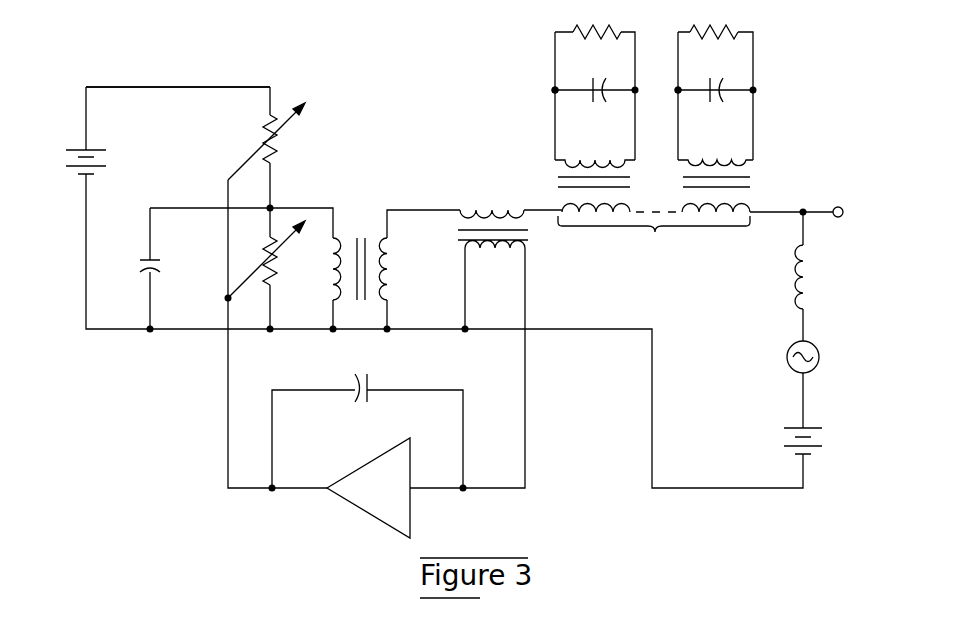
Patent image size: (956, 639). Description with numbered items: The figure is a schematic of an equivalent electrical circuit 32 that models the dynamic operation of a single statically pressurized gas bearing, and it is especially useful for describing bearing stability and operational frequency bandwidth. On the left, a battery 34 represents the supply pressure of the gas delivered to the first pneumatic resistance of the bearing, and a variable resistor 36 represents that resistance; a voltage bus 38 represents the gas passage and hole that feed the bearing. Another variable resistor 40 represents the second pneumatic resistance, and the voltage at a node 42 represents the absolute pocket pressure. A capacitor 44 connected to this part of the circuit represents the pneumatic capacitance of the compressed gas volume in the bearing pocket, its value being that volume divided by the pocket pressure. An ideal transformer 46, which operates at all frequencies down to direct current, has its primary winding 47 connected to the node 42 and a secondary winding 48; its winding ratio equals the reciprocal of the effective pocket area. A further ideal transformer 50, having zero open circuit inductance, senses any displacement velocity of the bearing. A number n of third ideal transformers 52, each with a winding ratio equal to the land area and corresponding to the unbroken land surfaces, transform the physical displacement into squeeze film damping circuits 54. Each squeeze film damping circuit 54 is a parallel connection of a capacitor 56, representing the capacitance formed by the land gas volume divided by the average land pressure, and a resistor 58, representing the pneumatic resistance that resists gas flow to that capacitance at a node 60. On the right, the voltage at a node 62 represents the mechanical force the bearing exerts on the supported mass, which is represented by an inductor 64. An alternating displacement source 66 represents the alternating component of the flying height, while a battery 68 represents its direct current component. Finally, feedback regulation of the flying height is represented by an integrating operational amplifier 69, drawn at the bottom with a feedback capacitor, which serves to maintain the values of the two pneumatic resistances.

The equivalent electrical circuit 32 is at (218, 462).
The battery 34 is at (102, 151).
The variable resistor 36 is at (277, 141).
The voltage bus 38 is at (185, 87).
The variable resistor 40 is at (276, 279).
The node 42 is at (273, 207).
The capacitor 44 is at (152, 263).
The ideal transformer 46 is at (363, 230).
The primary winding 47 is at (331, 262).
The secondary winding 48 is at (393, 262).
The ideal transformer 50 is at (528, 243).
The third ideal transformers 52 is at (563, 173).
The squeeze film damping circuits 54 is at (638, 63).
The capacitor 56 is at (595, 102).
The resistor 58 is at (578, 30).
The node 60 is at (551, 90).
The node 62 is at (805, 206).
The inductor 64 is at (811, 262).
The A.C. displacement source 66 is at (820, 356).
The battery 68 is at (816, 427).
The integrating operational amplifier 69 is at (349, 503).